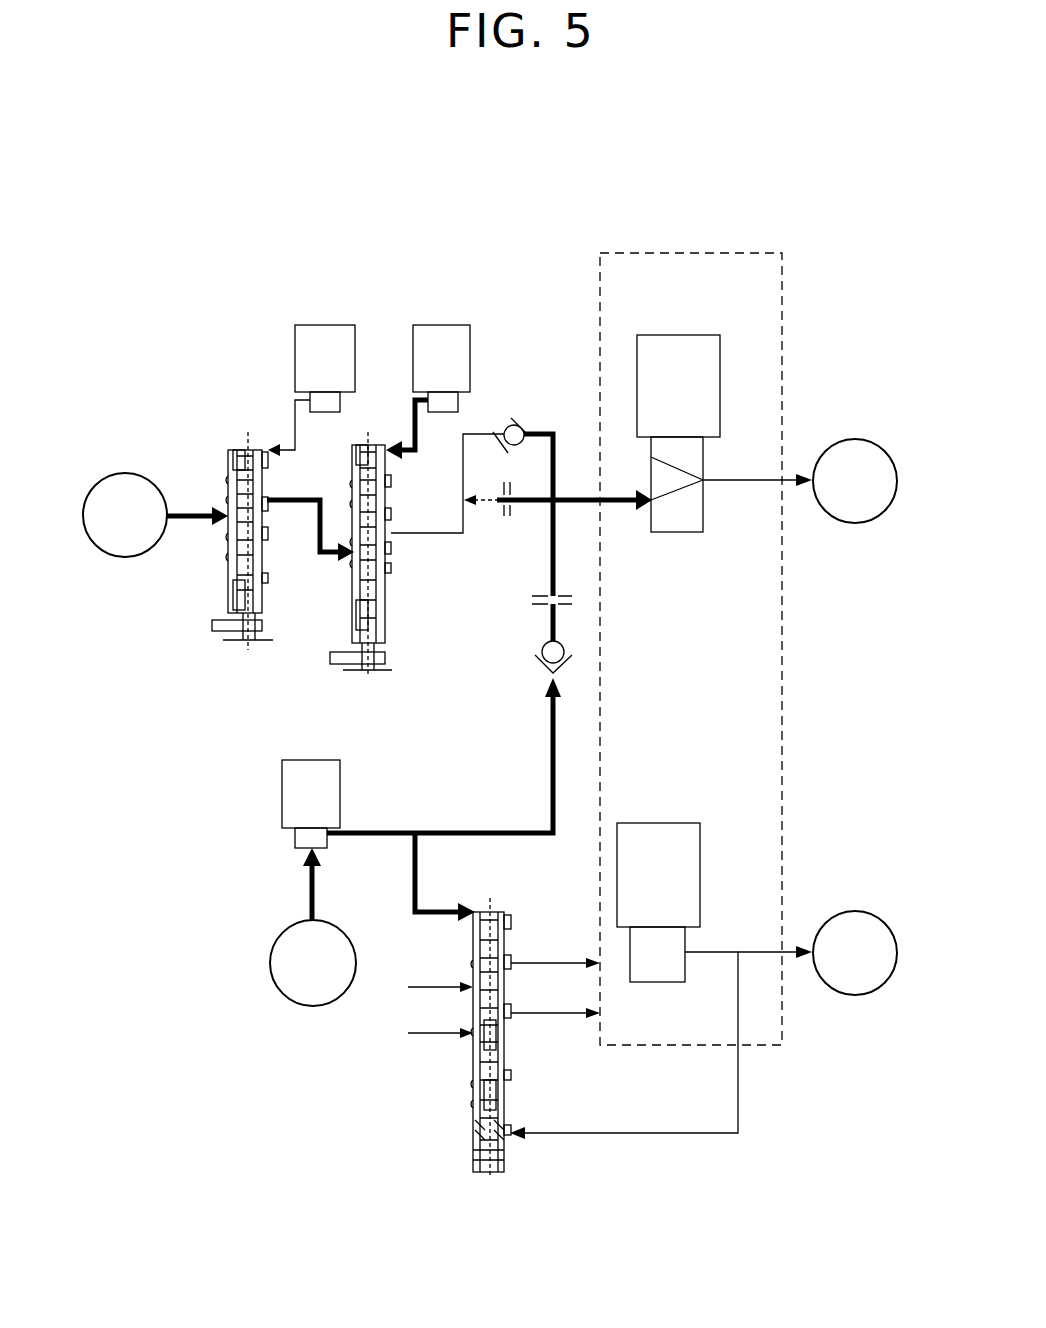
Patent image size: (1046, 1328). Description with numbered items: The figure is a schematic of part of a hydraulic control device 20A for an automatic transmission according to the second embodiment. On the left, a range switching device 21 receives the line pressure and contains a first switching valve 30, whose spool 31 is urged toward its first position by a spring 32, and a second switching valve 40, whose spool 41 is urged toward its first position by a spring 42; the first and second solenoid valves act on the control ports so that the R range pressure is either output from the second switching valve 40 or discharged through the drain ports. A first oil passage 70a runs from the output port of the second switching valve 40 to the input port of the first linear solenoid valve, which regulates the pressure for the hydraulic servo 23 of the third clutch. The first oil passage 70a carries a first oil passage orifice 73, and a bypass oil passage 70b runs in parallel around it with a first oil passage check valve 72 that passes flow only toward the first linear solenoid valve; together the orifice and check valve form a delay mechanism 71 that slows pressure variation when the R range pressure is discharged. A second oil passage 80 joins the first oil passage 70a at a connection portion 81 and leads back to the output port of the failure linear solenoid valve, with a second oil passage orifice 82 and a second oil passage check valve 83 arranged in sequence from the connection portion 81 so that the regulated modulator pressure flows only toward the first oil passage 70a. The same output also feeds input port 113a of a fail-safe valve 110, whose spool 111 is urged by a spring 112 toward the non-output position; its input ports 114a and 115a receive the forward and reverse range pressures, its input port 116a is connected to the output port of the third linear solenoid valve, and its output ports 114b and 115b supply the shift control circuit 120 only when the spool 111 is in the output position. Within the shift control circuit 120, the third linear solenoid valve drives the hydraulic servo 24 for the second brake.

The hydraulic control device 20A is at (552, 203).
The range switching device 21 is at (183, 305).
The hydraulic servo 23 is at (856, 438).
The hydraulic servo 24 is at (856, 910).
The first switching valve 30 is at (232, 426).
The spool 31 is at (235, 462).
The spring 32 is at (233, 598).
The second switching valve 40 is at (369, 435).
The spool 41 is at (356, 470).
The spring 42 is at (356, 628).
The first oil passage 70a is at (515, 512).
The bypass oil passage 70b is at (528, 430).
The delay mechanism 71 is at (498, 518).
The first oil passage check valve 72 is at (518, 416).
The first oil passage orifice 73 is at (510, 518).
The second oil passage 80 is at (552, 773).
The connection portion 81 is at (555, 498).
The second oil passage orifice 82 is at (532, 598).
The second oil passage check valve 83 is at (540, 648).
The fail-safe valve 110 is at (495, 888).
The spool 111 is at (508, 1030).
The spring 112 is at (508, 1092).
The input port 113a is at (472, 912).
The input port 114a is at (468, 966).
The output port 114b is at (511, 960).
The input port 115a is at (468, 1040).
The output port 115b is at (511, 1010).
The input port 116a is at (511, 1130).
The shift control circuit 120 is at (800, 645).